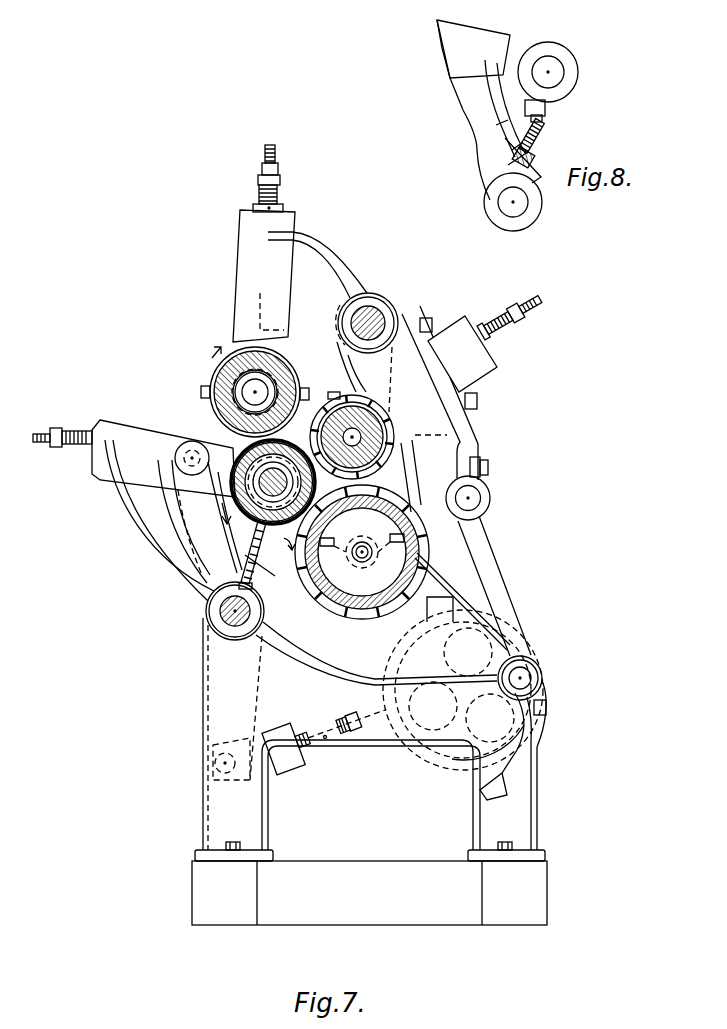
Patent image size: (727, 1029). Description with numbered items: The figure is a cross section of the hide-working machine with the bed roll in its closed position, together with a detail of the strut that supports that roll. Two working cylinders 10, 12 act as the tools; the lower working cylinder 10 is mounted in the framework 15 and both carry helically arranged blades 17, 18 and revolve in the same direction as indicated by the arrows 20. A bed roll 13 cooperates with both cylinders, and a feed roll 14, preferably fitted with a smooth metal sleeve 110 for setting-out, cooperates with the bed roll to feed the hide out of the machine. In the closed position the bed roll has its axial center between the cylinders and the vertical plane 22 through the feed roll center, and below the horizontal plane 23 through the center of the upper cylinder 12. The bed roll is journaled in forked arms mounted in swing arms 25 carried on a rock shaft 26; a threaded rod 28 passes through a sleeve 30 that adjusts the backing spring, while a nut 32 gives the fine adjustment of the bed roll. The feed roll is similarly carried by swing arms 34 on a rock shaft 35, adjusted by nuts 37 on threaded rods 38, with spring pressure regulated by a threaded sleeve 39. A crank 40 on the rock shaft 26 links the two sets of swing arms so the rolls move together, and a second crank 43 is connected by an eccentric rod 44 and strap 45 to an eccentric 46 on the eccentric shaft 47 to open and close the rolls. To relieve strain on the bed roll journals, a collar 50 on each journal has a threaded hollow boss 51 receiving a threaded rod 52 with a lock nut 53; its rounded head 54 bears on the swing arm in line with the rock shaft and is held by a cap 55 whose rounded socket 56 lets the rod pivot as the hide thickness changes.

In FIG. 7, the working cylinder 10 is at (346, 617).
In FIG. 7, the working cylinder 12 is at (386, 418).
In FIG. 7, the bed roll 13 is at (221, 438).
In FIG. 7, the feed roll 14 is at (281, 357).
In FIG. 7, the framework 15 is at (488, 568).
In FIG. 7, the helically arranged blades 17 is at (417, 536).
In FIG. 7, the helically arranged blades 18 is at (402, 446).
In FIG. 7, the arrows 20 is at (404, 420).
In FIG. 7, the vertical plane 22 is at (264, 273).
In FIG. 7, the horizontal plane 23 is at (431, 424).
In FIG. 7, the swing arms 25 is at (146, 578).
In FIG. 8, the swing arms 25 is at (487, 130).
In FIG. 7, the rock shaft 26 is at (236, 618).
In FIG. 8, the rock shaft 26 is at (508, 203).
In FIG. 7, the threaded rod 28 is at (44, 432).
In FIG. 7, the sleeve 30 is at (74, 434).
In FIG. 7, the nut 32 is at (54, 447).
In FIG. 7, the swing arms 34 is at (337, 258).
In FIG. 7, the rock shaft 35 is at (385, 312).
In FIG. 7, the nuts 37 is at (278, 173).
In FIG. 7, the threaded rods 38 is at (265, 152).
In FIG. 7, the threaded sleeve 39 is at (259, 192).
In FIG. 7, the crank 40 is at (185, 527).
In FIG. 7, the crank 43 is at (257, 696).
In FIG. 7, the eccentric rod 44 is at (328, 729).
In FIG. 7, the strap 45 is at (548, 718).
In FIG. 7, the eccentric 46 is at (455, 757).
In FIG. 7, the eccentric shaft 47 is at (525, 677).
In FIG. 8, the collar 50 is at (568, 72).
In FIG. 8, the threaded hollow boss 51 is at (529, 101).
In FIG. 7, the threaded rod 52 is at (247, 547).
In FIG. 8, the threaded rod 52 is at (538, 132).
In FIG. 8, the lock nut 53 is at (543, 118).
In FIG. 8, the rounded head 54 is at (513, 158).
In FIG. 8, the cap 55 is at (534, 157).
In FIG. 8, the rounded socket 56 is at (515, 153).
In FIG. 7, the metal sleeve 110 is at (233, 352).